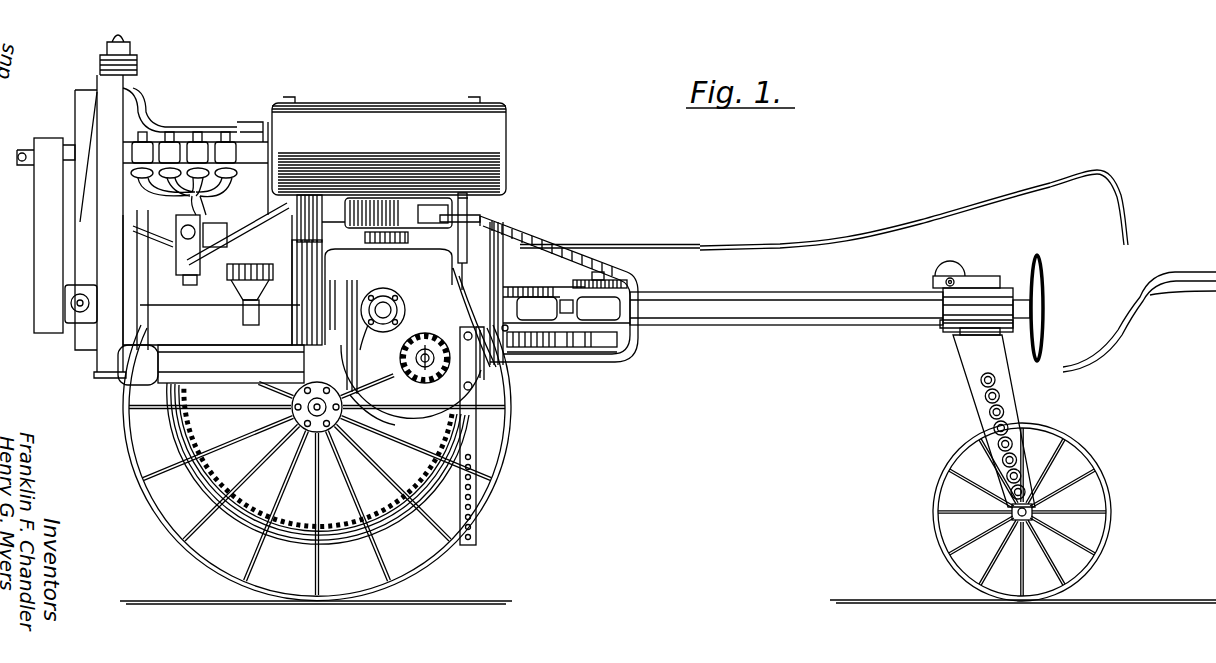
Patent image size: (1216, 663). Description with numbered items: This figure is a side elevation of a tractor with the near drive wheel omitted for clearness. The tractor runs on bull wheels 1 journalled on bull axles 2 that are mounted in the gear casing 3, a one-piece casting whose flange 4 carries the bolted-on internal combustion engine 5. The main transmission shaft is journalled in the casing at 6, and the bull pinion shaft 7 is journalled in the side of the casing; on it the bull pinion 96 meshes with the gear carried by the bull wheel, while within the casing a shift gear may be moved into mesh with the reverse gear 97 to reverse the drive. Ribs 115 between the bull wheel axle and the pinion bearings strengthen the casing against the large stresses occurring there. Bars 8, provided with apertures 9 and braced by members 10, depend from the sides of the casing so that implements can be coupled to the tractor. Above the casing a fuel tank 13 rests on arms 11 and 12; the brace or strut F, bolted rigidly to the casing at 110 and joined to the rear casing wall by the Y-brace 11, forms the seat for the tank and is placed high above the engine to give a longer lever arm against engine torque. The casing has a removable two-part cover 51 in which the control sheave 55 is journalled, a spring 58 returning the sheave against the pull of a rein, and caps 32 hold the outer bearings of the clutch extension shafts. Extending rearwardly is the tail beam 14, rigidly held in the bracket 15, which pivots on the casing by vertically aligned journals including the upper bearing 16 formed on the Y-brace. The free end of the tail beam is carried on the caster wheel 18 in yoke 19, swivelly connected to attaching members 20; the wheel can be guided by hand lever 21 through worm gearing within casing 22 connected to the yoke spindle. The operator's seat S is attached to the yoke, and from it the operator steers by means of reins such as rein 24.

The bull wheel 1 is at (506, 456).
The bull axle 2 is at (303, 410).
The gear casing 3 is at (410, 337).
The flange 4 is at (285, 306).
The internal combustion engine 5 is at (160, 210).
The main shaft journal 6 is at (363, 340).
The bull pinion shaft 7 is at (418, 375).
The bar 8 is at (478, 428).
The aperture 9 is at (472, 527).
The bracing member 10 is at (390, 470).
The Y-brace 11 is at (550, 207).
The arm 12 is at (268, 207).
The fuel tank 13 is at (390, 122).
The tail beam 14 is at (752, 310).
The bracket 15 is at (600, 265).
The journal 16 is at (477, 210).
The caster wheel 18 is at (933, 527).
The yoke 19 is at (972, 362).
The attaching member 20 is at (992, 290).
The hand lever 21 is at (1047, 262).
The casing 22 is at (968, 283).
The rein 24 is at (872, 230).
The cap 32 is at (378, 292).
The removable cover 51 is at (408, 240).
The control sheave 55 is at (432, 215).
The spring 58 is at (365, 238).
The bull pinion 96 is at (426, 350).
The reverse gear 97 is at (205, 478).
The bolted connection point 110 is at (342, 200).
The rib 115 is at (388, 427).
The brace or strut F is at (393, 210).
The operator's seat S is at (1183, 274).